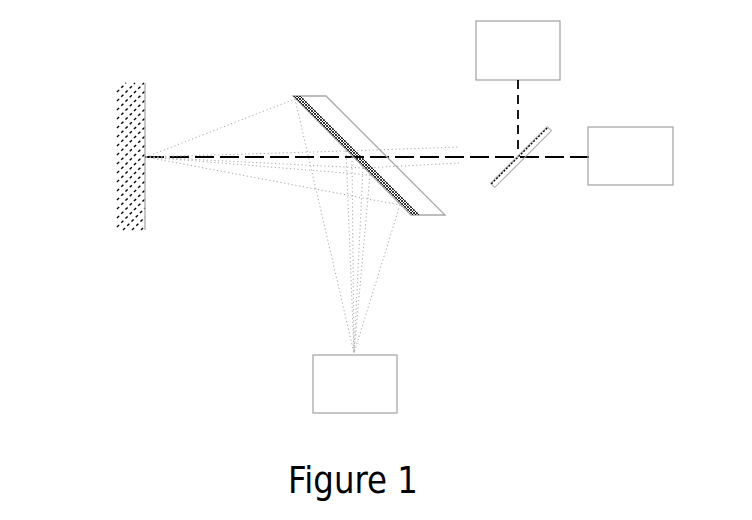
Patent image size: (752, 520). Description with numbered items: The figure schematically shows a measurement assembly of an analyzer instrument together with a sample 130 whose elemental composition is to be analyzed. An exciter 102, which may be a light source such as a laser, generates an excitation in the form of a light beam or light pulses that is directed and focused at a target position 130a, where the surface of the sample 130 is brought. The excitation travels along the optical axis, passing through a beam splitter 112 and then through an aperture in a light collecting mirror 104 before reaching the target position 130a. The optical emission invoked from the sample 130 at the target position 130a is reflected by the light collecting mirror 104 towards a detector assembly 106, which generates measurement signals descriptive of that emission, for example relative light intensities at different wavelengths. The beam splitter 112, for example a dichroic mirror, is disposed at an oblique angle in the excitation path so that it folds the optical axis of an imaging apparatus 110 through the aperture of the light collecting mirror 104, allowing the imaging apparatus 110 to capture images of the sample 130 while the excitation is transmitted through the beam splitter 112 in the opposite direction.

The exciter 102 is at (630, 156).
The light collecting mirror 104 is at (345, 122).
The detector assembly 106 is at (355, 384).
The imaging apparatus 110 is at (518, 85).
The beam splitter 112 is at (517, 168).
The sample 130 is at (122, 220).
The target position 130a is at (145, 157).